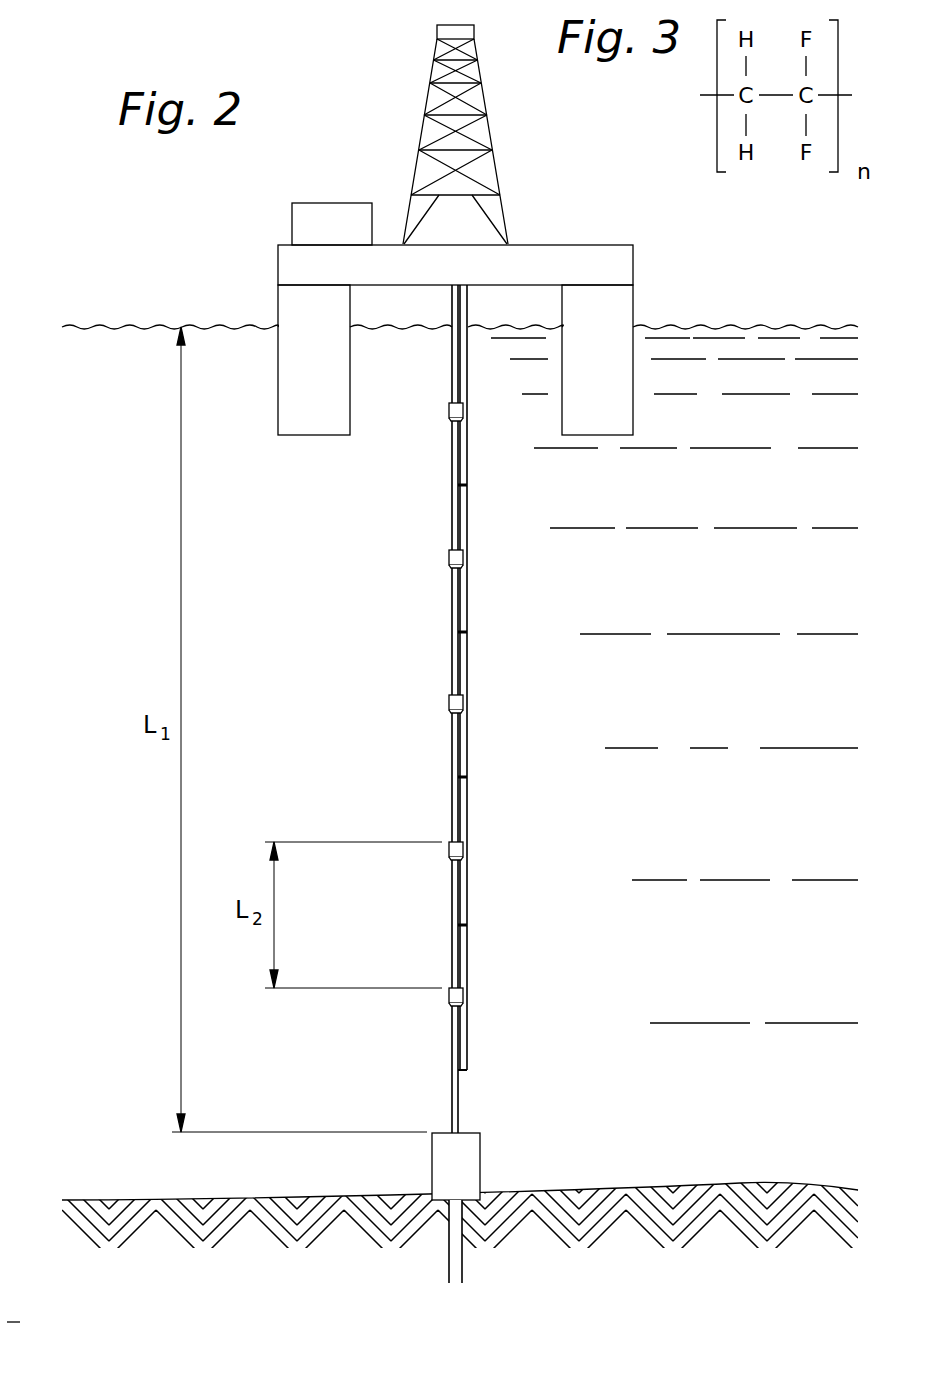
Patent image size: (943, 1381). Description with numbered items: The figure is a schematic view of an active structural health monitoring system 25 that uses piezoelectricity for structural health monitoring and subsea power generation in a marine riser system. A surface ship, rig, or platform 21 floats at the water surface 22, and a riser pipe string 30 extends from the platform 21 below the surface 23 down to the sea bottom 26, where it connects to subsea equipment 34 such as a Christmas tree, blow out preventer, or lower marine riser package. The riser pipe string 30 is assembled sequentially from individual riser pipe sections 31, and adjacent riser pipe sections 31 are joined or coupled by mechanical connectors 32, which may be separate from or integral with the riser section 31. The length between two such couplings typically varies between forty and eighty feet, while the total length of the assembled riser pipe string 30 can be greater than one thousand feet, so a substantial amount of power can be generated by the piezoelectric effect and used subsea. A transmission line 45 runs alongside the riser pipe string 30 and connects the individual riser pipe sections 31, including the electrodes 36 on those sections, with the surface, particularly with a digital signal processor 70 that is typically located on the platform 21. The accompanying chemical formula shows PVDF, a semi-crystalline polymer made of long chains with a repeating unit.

The platform 21 is at (602, 245).
The surface 22 is at (779, 328).
The below the surface 23 is at (794, 588).
The structural health monitoring system 25 is at (215, 235).
The sea bottom 26 is at (686, 1186).
The riser pipe string 30 is at (450, 613).
The riser pipe section 31 is at (451, 369).
The mechanical connector 32 is at (449, 409).
The subsea equipment 34 is at (432, 1165).
The electrode 36 is at (467, 775).
The transmission line 45 is at (468, 678).
The digital signal processor 70 is at (330, 203).